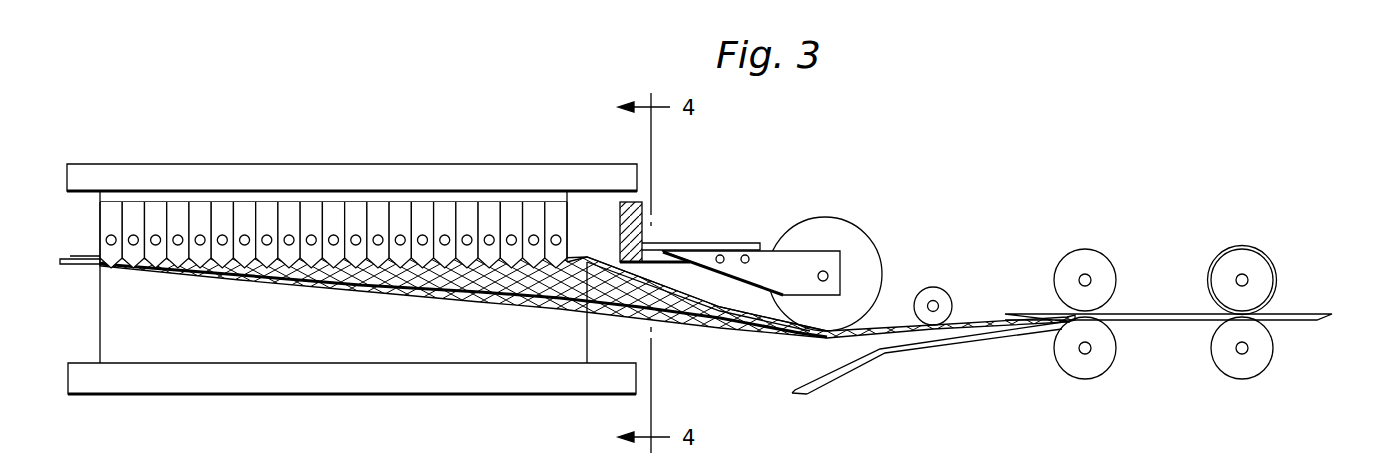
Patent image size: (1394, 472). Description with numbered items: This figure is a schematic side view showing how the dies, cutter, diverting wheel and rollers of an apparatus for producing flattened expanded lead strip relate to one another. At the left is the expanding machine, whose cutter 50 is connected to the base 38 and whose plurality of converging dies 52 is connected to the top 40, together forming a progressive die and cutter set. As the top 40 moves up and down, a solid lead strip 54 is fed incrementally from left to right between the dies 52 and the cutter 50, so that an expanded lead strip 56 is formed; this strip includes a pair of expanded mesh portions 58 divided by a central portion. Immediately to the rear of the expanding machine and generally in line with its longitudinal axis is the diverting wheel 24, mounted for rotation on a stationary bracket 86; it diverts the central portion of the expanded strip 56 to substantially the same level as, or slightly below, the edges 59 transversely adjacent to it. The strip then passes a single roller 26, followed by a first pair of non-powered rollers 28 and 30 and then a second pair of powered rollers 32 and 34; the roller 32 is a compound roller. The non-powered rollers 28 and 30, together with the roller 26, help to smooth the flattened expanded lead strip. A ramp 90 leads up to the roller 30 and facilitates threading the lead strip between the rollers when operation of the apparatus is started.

The diverting wheel 24 is at (837, 228).
The single roller 26 is at (933, 287).
The non-powered roller 28 is at (1065, 268).
The non-powered roller 30 is at (1082, 372).
The powered roller 32 is at (1228, 265).
The powered roller 34 is at (1240, 372).
The base 38 is at (360, 385).
The top 40 is at (489, 178).
The cutter 50 is at (245, 357).
The converging dies 52 is at (403, 217).
The solid lead strip 54 is at (83, 262).
The expanded lead strip 56 is at (1305, 312).
The expanded mesh portions 58 is at (562, 325).
The edges 59 is at (745, 335).
The stationary bracket 86 is at (773, 263).
The ramp 90 is at (925, 348).